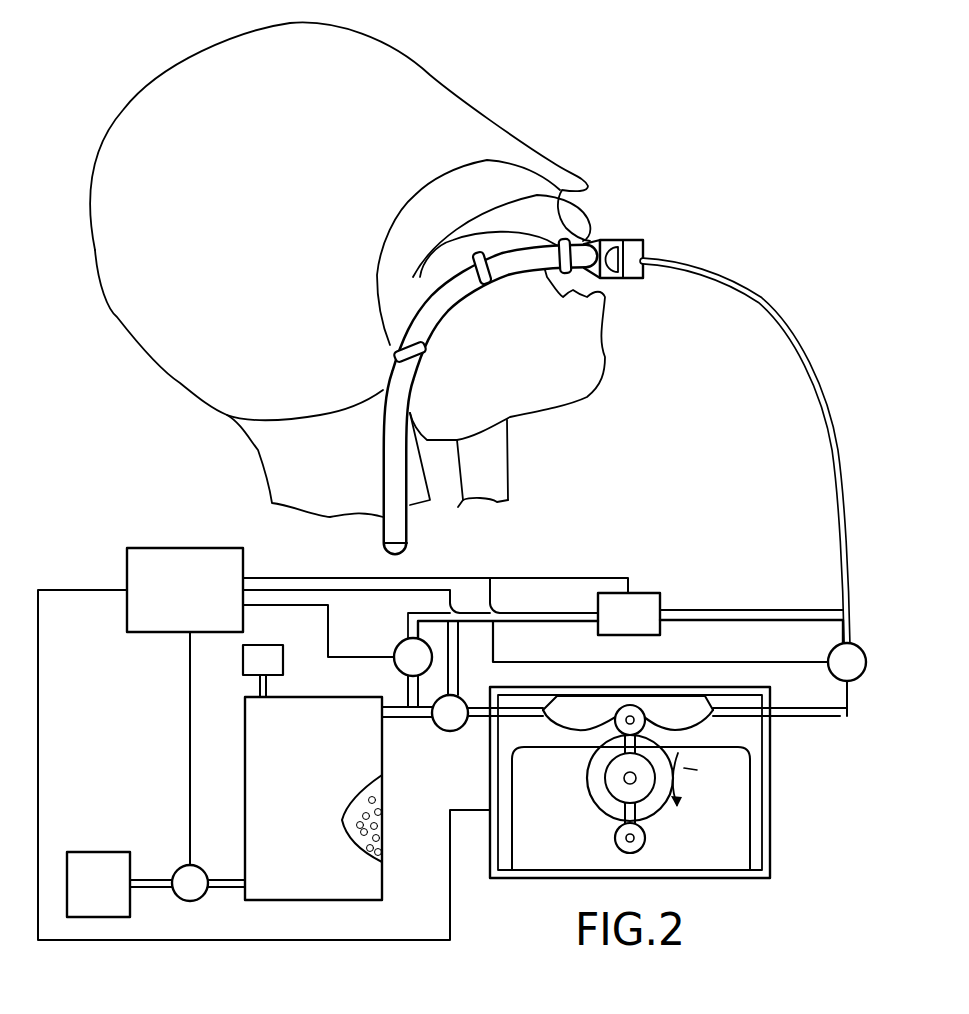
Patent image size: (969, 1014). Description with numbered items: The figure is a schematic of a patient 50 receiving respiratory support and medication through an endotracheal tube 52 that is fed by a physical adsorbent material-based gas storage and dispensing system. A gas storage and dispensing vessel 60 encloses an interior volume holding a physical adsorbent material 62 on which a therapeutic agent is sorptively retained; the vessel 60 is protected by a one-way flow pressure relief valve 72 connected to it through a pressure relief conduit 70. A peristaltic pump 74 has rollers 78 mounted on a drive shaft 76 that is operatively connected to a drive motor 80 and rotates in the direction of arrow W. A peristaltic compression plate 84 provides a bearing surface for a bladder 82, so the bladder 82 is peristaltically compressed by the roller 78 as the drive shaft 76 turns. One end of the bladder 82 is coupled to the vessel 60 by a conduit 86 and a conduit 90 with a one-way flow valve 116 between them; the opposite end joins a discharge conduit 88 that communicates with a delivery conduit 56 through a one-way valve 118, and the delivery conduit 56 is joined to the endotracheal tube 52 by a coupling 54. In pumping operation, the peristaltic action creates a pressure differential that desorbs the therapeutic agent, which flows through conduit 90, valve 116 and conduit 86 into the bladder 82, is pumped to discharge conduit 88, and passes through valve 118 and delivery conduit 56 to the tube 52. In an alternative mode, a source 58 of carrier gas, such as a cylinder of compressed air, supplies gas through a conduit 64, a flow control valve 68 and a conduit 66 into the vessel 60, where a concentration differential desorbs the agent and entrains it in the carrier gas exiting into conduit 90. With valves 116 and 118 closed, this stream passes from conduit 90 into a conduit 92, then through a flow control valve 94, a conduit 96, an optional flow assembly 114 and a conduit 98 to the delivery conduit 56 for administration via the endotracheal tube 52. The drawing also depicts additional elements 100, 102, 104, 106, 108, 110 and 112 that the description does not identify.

The patient 50 is at (395, 42).
The endotracheal tube 52 is at (408, 530).
The coupling 54 is at (636, 240).
The delivery conduit 56 is at (745, 289).
The source of carrier gas 58 is at (102, 852).
The gas storage and dispensing vessel 60 is at (334, 816).
The physical adsorbent material 62 is at (382, 795).
The conduit 64 is at (150, 880).
The conduit 66 is at (232, 880).
The flow control valve 68 is at (200, 897).
The pressure relief conduit 70 is at (268, 692).
The one-way flow pressure relief valve 72 is at (258, 645).
The peristaltic pump 74 is at (658, 816).
The drive shaft 76 is at (640, 790).
The rollers 78 is at (618, 722).
The drive motor 80 is at (740, 837).
The bladder 82 is at (707, 725).
The peristaltic compression plate 84 is at (632, 695).
The conduit 86 is at (492, 713).
The discharge conduit 88 is at (800, 716).
The conduit 90 is at (410, 718).
The conduit 92 is at (420, 690).
The flow control valve 94 is at (396, 670).
The conduit 96 is at (517, 622).
The conduit 98 is at (732, 622).
The controller 100 is at (173, 546).
The control line 102 is at (247, 940).
The control line 104 is at (190, 680).
The control line 106 is at (575, 577).
The control line 108 is at (490, 578).
The control line 110 is at (347, 592).
The control line 112 is at (332, 645).
The optional flow assembly 114 is at (655, 593).
The one-way flow valve 116 is at (460, 733).
The one-way valve 118 is at (865, 678).